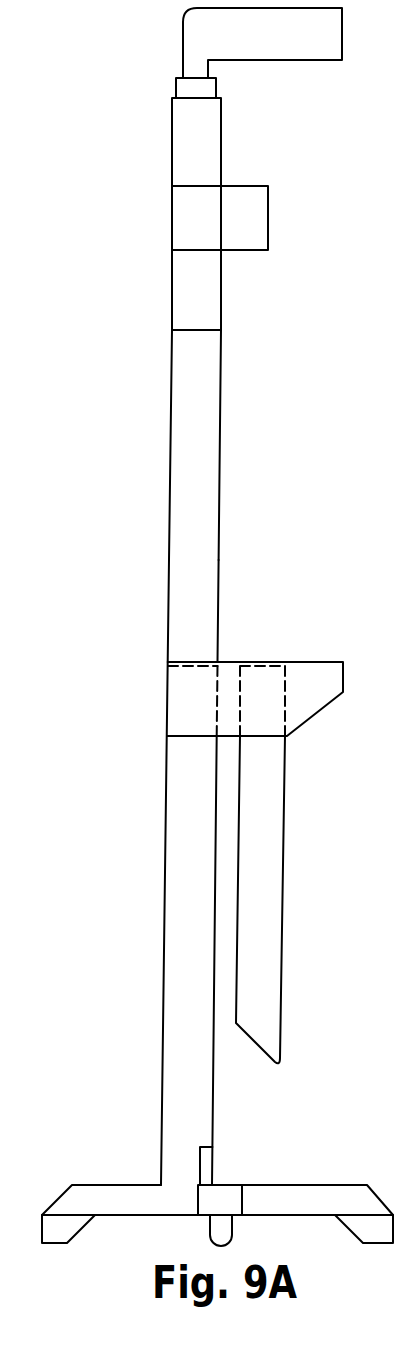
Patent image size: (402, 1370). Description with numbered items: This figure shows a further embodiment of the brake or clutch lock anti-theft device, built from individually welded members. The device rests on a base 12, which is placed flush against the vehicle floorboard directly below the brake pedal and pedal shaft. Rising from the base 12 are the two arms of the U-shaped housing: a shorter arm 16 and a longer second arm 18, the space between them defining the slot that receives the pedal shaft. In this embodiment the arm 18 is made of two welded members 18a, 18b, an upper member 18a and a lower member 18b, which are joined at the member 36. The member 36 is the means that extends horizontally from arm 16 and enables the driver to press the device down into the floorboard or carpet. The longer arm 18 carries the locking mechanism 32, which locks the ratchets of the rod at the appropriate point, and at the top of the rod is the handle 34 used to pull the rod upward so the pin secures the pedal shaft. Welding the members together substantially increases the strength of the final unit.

The base 12 is at (112, 1184).
The arm 16 is at (285, 850).
The arm 18 is at (135, 641).
The welded member 18a is at (168, 577).
The welded member 18b is at (166, 782).
The locking mechanism 32 is at (246, 213).
The handle 34 is at (200, 22).
The means for enabling the driver to press the device into the floorboard 36 is at (264, 660).